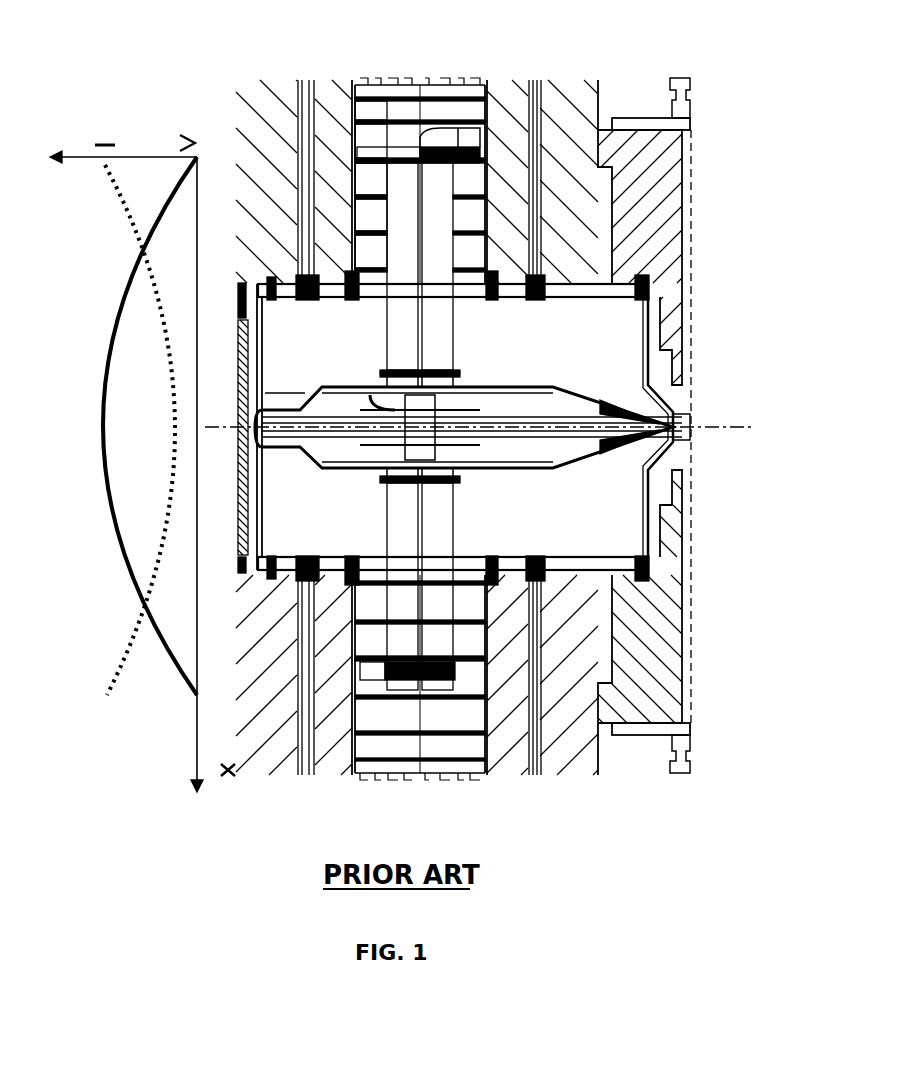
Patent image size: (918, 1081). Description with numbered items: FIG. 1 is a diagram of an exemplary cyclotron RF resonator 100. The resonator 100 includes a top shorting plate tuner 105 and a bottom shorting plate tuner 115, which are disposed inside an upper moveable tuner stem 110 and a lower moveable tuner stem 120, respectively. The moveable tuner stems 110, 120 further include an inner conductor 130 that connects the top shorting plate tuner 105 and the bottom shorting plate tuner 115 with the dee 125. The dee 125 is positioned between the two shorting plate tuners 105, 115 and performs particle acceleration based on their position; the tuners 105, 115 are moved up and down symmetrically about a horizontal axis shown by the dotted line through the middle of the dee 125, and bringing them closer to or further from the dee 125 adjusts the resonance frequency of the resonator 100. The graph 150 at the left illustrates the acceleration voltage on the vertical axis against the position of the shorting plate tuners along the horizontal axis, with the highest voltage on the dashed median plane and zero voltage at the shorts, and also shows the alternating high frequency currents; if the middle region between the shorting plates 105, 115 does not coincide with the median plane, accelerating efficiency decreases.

The cyclotron RF resonator 100 is at (726, 94).
The top shorting plate tuner 105 is at (373, 178).
The moveable tuner stem 110 is at (440, 80).
The bottom shorting plate tuner 115 is at (492, 690).
The moveable tuner stem 120 is at (383, 773).
The dee 125 is at (541, 387).
The inner conductor 130 is at (388, 357).
The graph 150 is at (124, 114).